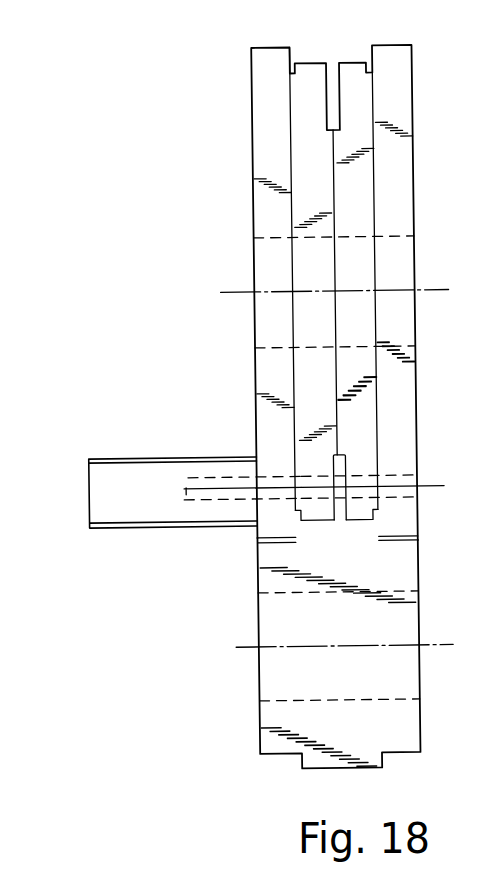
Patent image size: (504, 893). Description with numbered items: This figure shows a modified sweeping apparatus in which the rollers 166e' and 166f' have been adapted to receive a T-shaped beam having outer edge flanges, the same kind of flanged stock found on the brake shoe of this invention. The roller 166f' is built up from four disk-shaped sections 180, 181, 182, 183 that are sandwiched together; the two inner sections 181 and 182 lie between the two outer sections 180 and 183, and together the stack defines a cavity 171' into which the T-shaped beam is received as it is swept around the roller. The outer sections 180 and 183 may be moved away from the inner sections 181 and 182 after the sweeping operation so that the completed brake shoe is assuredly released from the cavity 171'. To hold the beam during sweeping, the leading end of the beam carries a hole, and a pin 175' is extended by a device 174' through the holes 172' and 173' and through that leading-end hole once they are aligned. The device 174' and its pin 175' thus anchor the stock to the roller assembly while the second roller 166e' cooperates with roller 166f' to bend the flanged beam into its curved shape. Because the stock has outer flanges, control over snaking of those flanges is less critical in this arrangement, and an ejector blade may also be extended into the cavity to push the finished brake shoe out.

The roller 166f' is at (302, 294).
The roller 166e' is at (334, 671).
The outer disk-shaped section 180 is at (262, 46).
The inner disk-shaped section 181 is at (307, 170).
The inner disk-shaped section 182 is at (363, 172).
The outer disk-shaped section 183 is at (402, 92).
The cavity 171' is at (402, 482).
The hole 172' is at (298, 466).
The hole 173' is at (394, 499).
The device 174' is at (147, 469).
The pin 175' is at (239, 526).